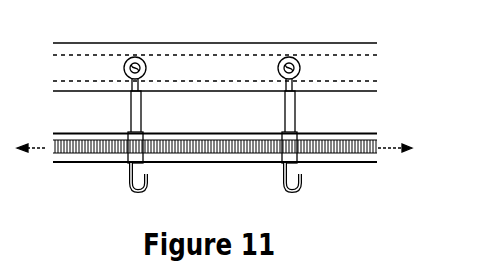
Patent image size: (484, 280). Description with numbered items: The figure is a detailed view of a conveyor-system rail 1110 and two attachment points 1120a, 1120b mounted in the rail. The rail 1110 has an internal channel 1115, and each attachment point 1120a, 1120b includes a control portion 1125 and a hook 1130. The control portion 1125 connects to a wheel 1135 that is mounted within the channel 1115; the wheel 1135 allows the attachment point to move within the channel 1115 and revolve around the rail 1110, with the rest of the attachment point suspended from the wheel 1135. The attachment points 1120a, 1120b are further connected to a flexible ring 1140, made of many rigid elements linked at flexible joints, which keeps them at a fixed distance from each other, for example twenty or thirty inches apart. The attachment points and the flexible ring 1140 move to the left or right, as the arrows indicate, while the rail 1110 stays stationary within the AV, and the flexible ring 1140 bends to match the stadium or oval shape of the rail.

The rail 1110 is at (207, 43).
The internal channel 1115 is at (370, 65).
The wheel 1135 is at (292, 58).
The control portion 1125 is at (283, 133).
The flexible ring 1140 is at (342, 133).
The hook 1130 is at (283, 175).
The attachment point 1120a is at (125, 186).
The attachment point 1120b is at (322, 175).